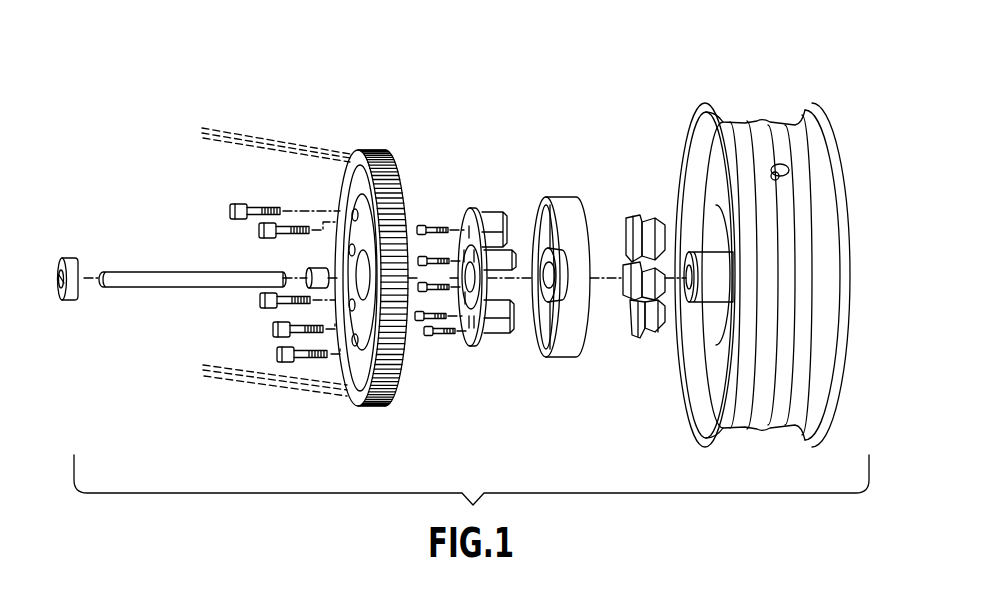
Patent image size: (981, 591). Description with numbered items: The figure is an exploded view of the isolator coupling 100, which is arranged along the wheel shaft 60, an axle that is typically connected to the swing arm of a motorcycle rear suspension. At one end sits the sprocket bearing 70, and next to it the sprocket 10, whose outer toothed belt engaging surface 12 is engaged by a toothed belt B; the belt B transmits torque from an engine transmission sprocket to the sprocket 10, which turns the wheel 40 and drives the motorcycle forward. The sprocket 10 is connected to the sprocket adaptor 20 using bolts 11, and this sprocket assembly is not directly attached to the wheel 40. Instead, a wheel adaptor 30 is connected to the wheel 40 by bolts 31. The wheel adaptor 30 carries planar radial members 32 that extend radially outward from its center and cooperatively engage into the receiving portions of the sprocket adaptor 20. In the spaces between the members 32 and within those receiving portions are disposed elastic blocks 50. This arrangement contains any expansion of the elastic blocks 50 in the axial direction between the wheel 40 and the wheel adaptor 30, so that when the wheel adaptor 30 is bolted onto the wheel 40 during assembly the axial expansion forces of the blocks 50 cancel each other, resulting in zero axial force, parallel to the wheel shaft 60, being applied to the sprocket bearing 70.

The coupling 100 is at (601, 80).
The sprocket 10 is at (392, 398).
The bolts 11 is at (272, 331).
The toothed belt engaging surface 12 is at (395, 155).
The toothed belt B is at (298, 143).
The sprocket adaptor 20 is at (568, 197).
The wheel adaptor 30 is at (472, 346).
The bolts 31 is at (435, 333).
The planar radial members 32 is at (493, 337).
The wheel 40 is at (755, 122).
The elastic blocks 50 is at (650, 337).
The wheel shaft 60 is at (148, 288).
The sprocket bearing 70 is at (70, 258).